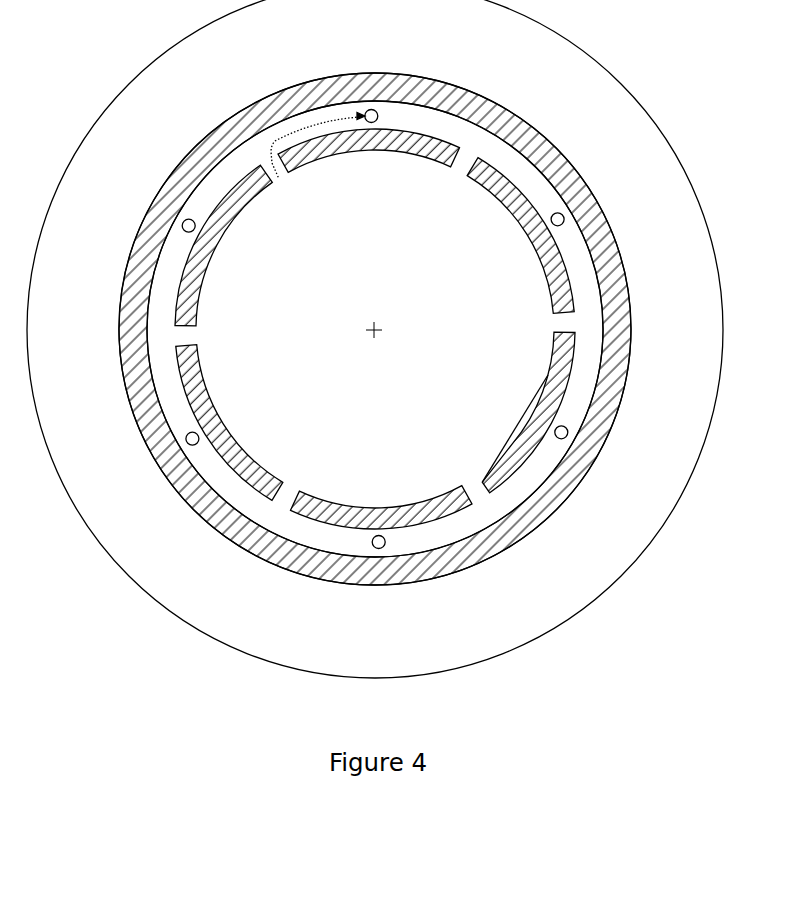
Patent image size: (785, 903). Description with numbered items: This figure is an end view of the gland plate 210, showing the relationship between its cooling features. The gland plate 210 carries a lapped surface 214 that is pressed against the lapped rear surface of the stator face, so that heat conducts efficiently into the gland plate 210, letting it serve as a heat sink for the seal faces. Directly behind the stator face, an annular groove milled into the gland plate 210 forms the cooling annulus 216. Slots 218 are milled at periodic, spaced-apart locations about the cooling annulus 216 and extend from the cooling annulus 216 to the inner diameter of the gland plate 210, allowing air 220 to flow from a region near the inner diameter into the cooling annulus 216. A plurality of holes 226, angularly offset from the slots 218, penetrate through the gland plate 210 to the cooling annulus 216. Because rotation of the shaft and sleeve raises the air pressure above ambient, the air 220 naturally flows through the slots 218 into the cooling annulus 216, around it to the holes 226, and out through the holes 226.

The gland plate 210 is at (263, 67).
The lapped surface 214 is at (532, 142).
The cooling annulus 216 is at (442, 128).
The slots 218 is at (185, 337).
The air 220 is at (282, 181).
The hole 226 is at (380, 112).